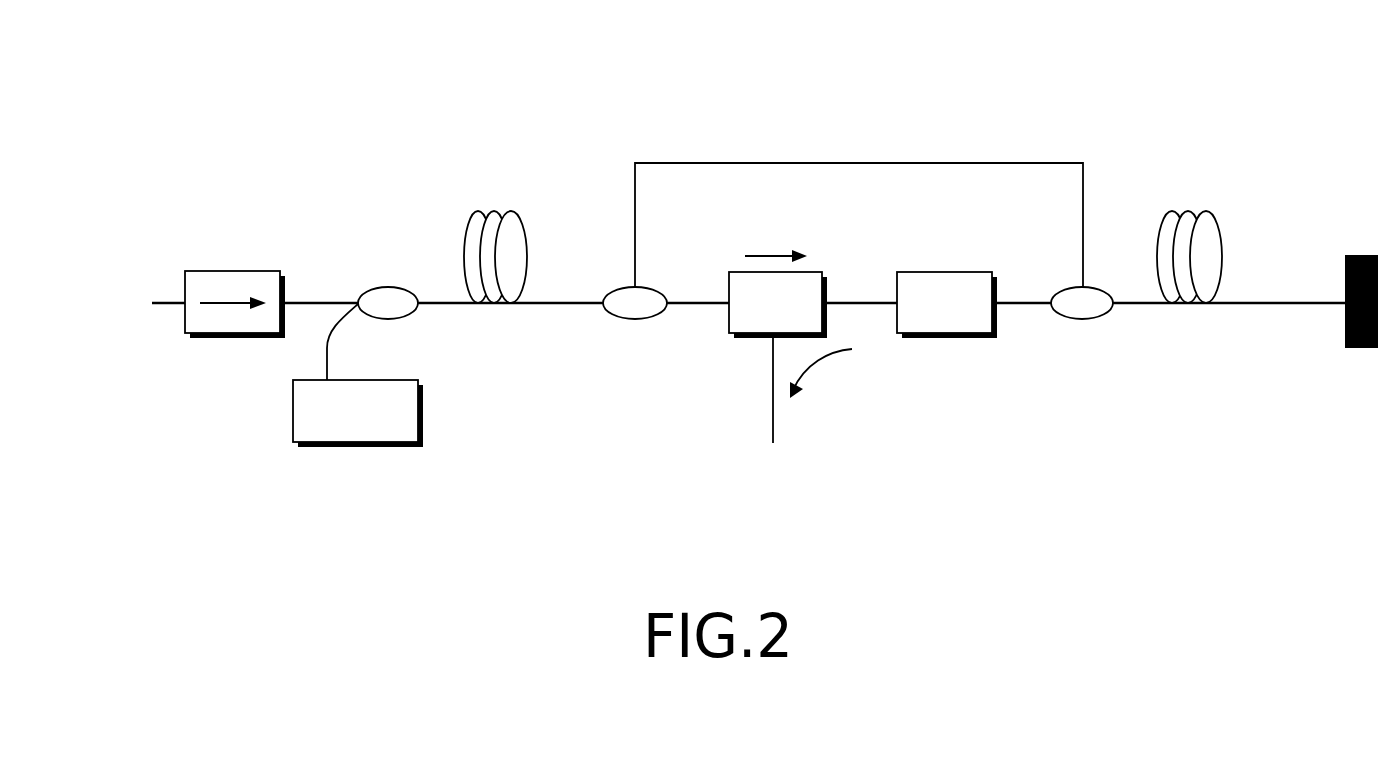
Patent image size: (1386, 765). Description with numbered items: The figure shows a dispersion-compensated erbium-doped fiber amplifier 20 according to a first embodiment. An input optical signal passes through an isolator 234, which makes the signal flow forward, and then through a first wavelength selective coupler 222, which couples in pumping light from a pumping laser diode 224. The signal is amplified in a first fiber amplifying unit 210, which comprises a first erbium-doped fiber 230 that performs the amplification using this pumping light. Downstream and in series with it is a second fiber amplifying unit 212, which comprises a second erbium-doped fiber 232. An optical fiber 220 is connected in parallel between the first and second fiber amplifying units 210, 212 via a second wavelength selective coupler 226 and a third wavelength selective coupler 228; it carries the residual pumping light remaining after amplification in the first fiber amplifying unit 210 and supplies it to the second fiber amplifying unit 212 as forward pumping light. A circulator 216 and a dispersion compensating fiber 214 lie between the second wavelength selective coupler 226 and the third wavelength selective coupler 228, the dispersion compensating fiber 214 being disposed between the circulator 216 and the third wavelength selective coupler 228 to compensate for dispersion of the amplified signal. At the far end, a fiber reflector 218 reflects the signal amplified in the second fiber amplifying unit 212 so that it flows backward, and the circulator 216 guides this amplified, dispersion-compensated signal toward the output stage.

The dispersion-compensated erbium-doped fiber amplifier 20 is at (790, 72).
The first fiber amplifying unit 210 is at (496, 208).
The second fiber amplifying unit 212 is at (1189, 207).
The dispersion compensating fiber 214 is at (943, 338).
The circulator 216 is at (745, 338).
The fiber reflector 218 is at (1345, 335).
The optical fiber 220 is at (868, 163).
The first wavelength selective coupler 222 is at (358, 300).
The pumping laser diode 224 is at (354, 449).
The second wavelength selective coupler 226 is at (628, 320).
The third wavelength selective coupler 228 is at (1058, 292).
The first erbium-doped fiber 230 is at (514, 212).
The second erbium-doped fiber 232 is at (1210, 212).
The isolator 234 is at (230, 338).